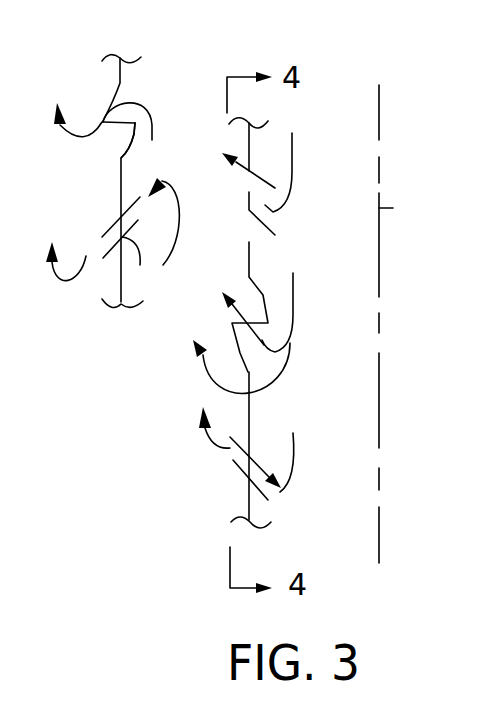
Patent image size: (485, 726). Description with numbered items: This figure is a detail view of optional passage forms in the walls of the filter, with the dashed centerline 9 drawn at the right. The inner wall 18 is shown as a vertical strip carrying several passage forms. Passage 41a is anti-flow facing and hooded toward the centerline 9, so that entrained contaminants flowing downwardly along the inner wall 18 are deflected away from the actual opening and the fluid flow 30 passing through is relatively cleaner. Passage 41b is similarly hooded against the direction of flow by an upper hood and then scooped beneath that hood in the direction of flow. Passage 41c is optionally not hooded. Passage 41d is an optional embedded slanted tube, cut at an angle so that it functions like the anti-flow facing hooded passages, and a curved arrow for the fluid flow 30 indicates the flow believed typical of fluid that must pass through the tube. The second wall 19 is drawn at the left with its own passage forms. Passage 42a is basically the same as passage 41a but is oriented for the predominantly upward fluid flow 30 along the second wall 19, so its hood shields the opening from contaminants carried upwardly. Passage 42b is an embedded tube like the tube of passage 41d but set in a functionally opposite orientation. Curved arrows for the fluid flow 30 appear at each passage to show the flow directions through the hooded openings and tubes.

The centerline 9 is at (397, 205).
The inner wall 18 is at (250, 502).
The second wall 19 is at (121, 282).
The fluid flow 30 is at (141, 98).
The passage 41a is at (260, 172).
The passage 41b is at (266, 322).
The passage 41c is at (275, 399).
The embedded slanted tube 41d is at (261, 464).
The passage 42a is at (125, 150).
The passage 42b is at (132, 244).